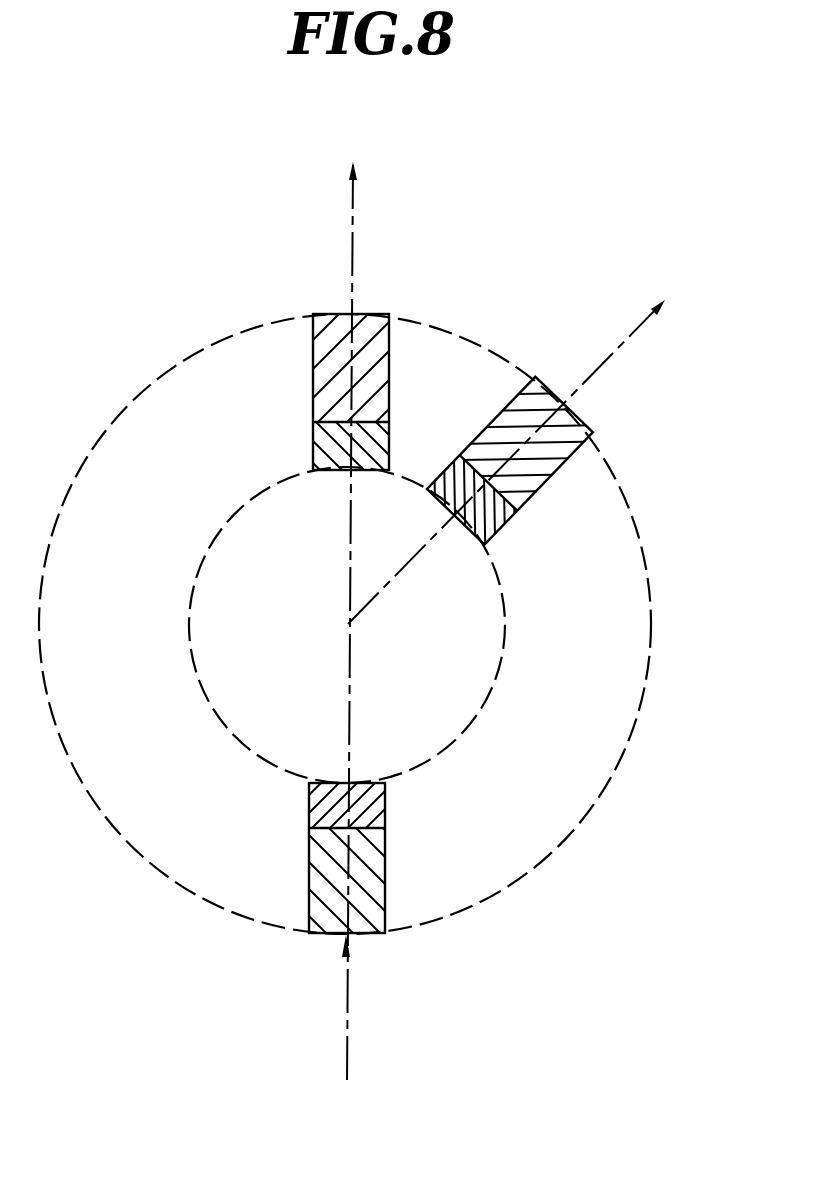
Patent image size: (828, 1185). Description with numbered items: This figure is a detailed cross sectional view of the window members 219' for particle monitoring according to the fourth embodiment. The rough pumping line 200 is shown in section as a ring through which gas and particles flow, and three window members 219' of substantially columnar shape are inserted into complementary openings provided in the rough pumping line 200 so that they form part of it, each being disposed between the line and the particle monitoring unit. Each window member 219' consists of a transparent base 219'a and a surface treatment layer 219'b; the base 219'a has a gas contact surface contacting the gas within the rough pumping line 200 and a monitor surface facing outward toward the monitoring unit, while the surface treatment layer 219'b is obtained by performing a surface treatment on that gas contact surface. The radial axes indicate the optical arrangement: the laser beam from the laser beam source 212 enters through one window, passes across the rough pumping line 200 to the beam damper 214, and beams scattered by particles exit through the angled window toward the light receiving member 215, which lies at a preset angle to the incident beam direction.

The rough pumping line 200 is at (162, 362).
The laser beam source 212 is at (345, 1029).
The beam damper 214 is at (356, 608).
The light receiving member 215 is at (519, 449).
The window member for particle monitoring 219' is at (464, 628).
The transparent base 219'a is at (416, 628).
The surface treatment layer 219'b is at (395, 622).